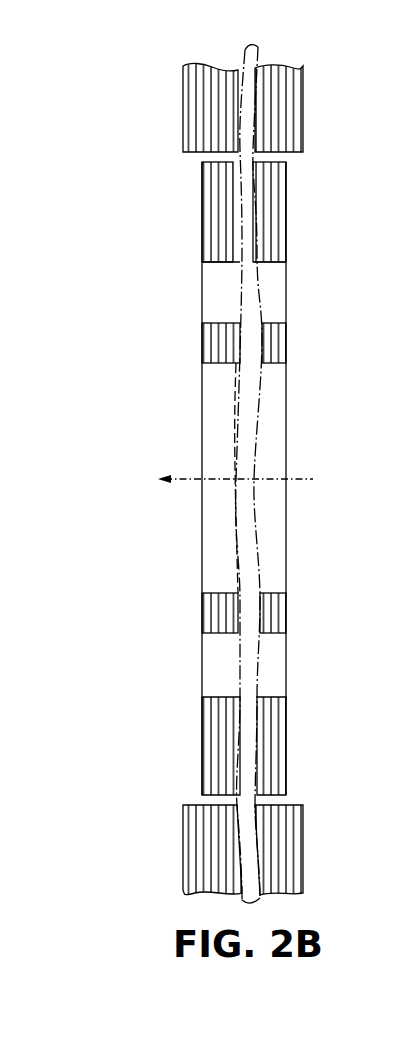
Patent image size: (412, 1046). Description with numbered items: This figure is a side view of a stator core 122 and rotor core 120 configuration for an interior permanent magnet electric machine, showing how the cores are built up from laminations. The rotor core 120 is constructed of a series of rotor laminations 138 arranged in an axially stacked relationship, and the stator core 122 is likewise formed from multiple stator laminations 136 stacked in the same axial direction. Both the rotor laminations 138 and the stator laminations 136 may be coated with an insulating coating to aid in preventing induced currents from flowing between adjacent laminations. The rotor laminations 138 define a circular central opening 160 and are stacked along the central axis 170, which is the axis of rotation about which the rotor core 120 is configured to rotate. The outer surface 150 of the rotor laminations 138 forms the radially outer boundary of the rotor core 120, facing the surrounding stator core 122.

The rotor core 120 is at (290, 220).
The stator core 122 is at (307, 128).
The stator laminations 136 is at (200, 887).
The rotor laminations 138 is at (225, 180).
The outer surface 150 is at (270, 797).
The circular central opening 160 is at (227, 367).
The central axis 170 is at (300, 479).